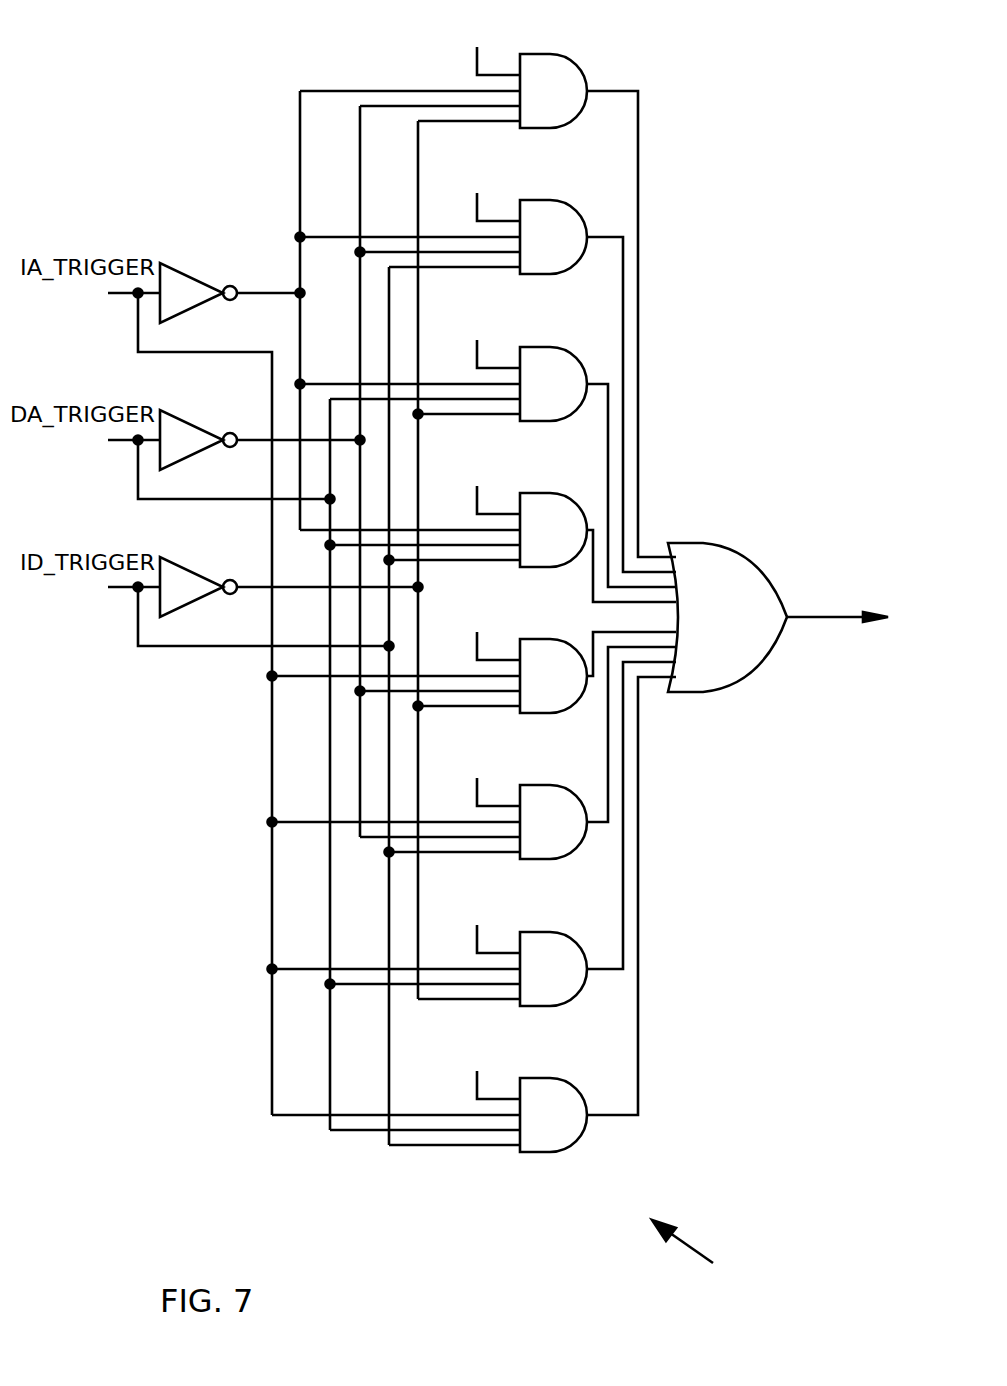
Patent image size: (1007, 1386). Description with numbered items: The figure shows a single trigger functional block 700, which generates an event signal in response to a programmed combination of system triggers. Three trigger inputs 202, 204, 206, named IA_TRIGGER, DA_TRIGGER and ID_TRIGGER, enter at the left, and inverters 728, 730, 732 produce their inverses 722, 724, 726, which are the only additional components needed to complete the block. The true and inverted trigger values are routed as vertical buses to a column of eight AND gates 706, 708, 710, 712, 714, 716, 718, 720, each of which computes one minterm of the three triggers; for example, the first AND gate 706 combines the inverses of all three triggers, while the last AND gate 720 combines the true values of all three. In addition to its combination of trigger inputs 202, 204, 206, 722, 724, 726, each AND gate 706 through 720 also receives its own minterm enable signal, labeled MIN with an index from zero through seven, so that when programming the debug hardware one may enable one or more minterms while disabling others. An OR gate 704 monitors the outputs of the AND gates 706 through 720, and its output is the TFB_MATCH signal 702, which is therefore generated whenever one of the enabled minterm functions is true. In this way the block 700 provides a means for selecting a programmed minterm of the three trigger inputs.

The trigger functional block 700 is at (704, 1256).
The TFB_MATCH signal 702 is at (800, 620).
The OR gate 704 is at (745, 628).
The AND gate 706 is at (570, 110).
The AND gate 708 is at (570, 256).
The AND gate 710 is at (570, 403).
The AND gate 712 is at (570, 549).
The AND gate 714 is at (570, 695).
The AND gate 716 is at (570, 841).
The AND gate 718 is at (570, 988).
The AND gate 720 is at (570, 1134).
The inverted trigger 722 is at (287, 292).
The inverted trigger 724 is at (257, 437).
The inverted trigger 726 is at (257, 584).
The inverter 728 is at (183, 272).
The inverter 730 is at (183, 419).
The inverter 732 is at (183, 566).
The trigger 202 is at (182, 352).
The trigger 204 is at (182, 499).
The trigger 206 is at (182, 646).